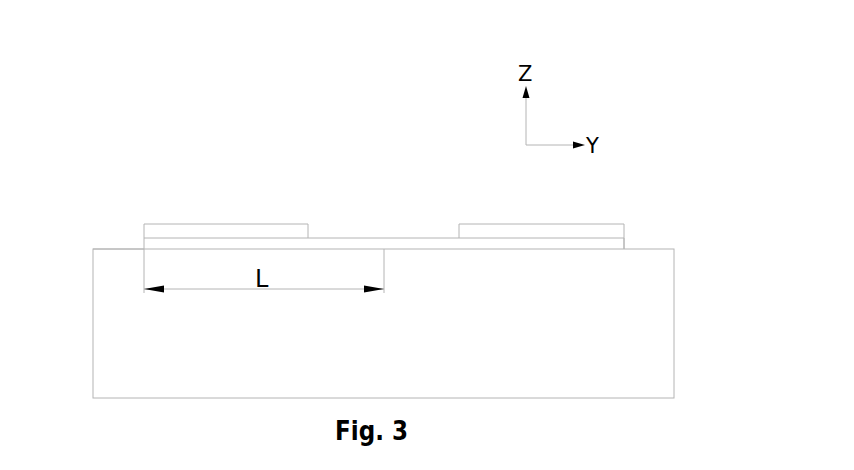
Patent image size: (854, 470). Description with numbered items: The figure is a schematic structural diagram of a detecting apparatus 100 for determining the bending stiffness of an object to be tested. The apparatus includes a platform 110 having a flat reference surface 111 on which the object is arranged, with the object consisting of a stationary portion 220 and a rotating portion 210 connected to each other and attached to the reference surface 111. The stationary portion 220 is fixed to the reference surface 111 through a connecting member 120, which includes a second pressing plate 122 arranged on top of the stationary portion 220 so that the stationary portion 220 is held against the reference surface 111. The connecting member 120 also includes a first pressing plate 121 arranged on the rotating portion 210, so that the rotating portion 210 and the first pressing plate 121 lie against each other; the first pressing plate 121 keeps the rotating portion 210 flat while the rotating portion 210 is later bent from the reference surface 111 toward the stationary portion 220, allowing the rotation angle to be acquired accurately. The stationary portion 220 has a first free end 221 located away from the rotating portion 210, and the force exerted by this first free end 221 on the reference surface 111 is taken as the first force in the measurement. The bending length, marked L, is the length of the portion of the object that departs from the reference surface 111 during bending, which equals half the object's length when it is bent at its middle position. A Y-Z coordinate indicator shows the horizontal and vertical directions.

The detecting apparatus 100 is at (406, 47).
The platform 110 is at (106, 342).
The reference surface 111 is at (120, 233).
The connecting member 120 is at (384, 180).
The first pressing plate 121 is at (307, 221).
The second pressing plate 122 is at (470, 227).
The rotating portion 210 is at (234, 243).
The stationary portion 220 is at (541, 242).
The first free end 221 is at (640, 235).